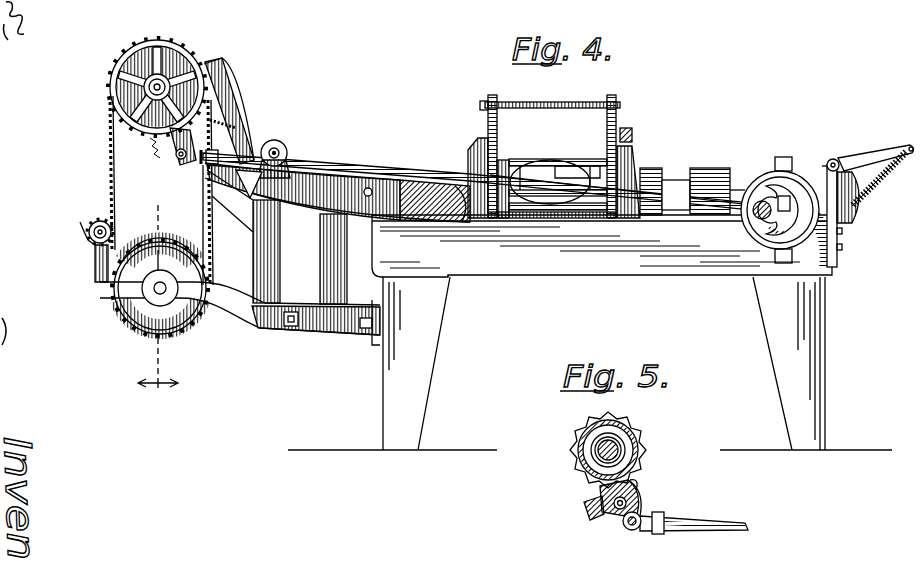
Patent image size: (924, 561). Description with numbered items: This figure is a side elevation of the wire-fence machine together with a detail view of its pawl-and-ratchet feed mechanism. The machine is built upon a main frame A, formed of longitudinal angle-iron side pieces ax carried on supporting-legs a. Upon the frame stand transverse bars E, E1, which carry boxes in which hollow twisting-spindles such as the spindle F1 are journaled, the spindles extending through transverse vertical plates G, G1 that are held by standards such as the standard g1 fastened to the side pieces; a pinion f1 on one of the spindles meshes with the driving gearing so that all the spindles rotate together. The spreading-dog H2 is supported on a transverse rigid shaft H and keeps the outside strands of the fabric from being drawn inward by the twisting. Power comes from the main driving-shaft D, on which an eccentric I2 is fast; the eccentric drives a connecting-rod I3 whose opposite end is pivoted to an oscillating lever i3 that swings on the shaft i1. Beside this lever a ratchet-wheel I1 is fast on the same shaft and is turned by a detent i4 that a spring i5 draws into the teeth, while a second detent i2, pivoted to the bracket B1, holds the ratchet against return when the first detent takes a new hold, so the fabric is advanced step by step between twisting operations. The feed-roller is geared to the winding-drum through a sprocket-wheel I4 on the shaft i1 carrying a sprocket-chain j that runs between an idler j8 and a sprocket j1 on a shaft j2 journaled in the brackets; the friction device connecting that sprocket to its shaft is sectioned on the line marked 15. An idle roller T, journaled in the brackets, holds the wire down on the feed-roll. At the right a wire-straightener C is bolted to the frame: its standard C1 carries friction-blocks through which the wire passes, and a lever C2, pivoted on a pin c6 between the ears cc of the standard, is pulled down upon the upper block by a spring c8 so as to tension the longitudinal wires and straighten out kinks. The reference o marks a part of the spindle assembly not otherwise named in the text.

In FIG. 4, the ratchet-wheel I1 is at (124, 86).
In FIG. 5, the ratchet-wheel I1 is at (576, 450).
In FIG. 4, the shaft i1 is at (150, 92).
In FIG. 5, the shaft i1 is at (600, 458).
In FIG. 4, the sprocket-wheel I4 is at (196, 66).
In FIG. 4, the second detent i2 is at (228, 97).
In FIG. 4, the sprocket-chain j is at (112, 152).
In FIG. 4, the oscillating lever i3 is at (176, 162).
In FIG. 5, the oscillating lever i3 is at (645, 504).
In FIG. 4, the connecting-rod I3 is at (328, 160).
In FIG. 5, the connecting-rod I3 is at (726, 522).
In FIG. 4, the idle roller T is at (283, 143).
In FIG. 4, the transverse rigid shaft H is at (368, 185).
In FIG. 4, the spreading-dog H2 is at (420, 175).
In FIG. 4, the bracket B1 is at (237, 257).
In FIG. 4, the shaft j2 is at (156, 296).
In FIG. 4, the sprocket j1 is at (181, 240).
In FIG. 4, the idler j8 is at (89, 227).
In FIG. 4, the section line 15 is at (158, 296).
In FIG. 4, the main frame A is at (602, 246).
In FIG. 4, the longitudinal angle-iron side piece ax is at (477, 264).
In FIG. 4, the supporting-leg a is at (590, 363).
In FIG. 4, the transverse vertical plate G is at (488, 128).
In FIG. 4, the cylinder o is at (555, 196).
In FIG. 4, the transverse vertical plate G1 is at (616, 104).
In FIG. 4, the standard g1 is at (620, 183).
In FIG. 4, the transverse bar E1 is at (645, 190).
In FIG. 4, the hollow spindle F1 is at (676, 182).
In FIG. 4, the transverse bar E is at (710, 180).
In FIG. 4, the pinion f1 is at (730, 190).
In FIG. 4, the eccentric I2 is at (796, 172).
In FIG. 4, the main driving-shaft D is at (762, 202).
In FIG. 4, the standard C1 is at (843, 205).
In FIG. 4, the pivot cc is at (834, 158).
In FIG. 4, the pin c6 is at (816, 158).
In FIG. 4, the wire-straightener C is at (848, 172).
In FIG. 4, the lever C2 is at (884, 153).
In FIG. 4, the spring c8 is at (879, 179).
In FIG. 5, the detent i4 is at (638, 492).
In FIG. 5, the spring i5 is at (600, 508).